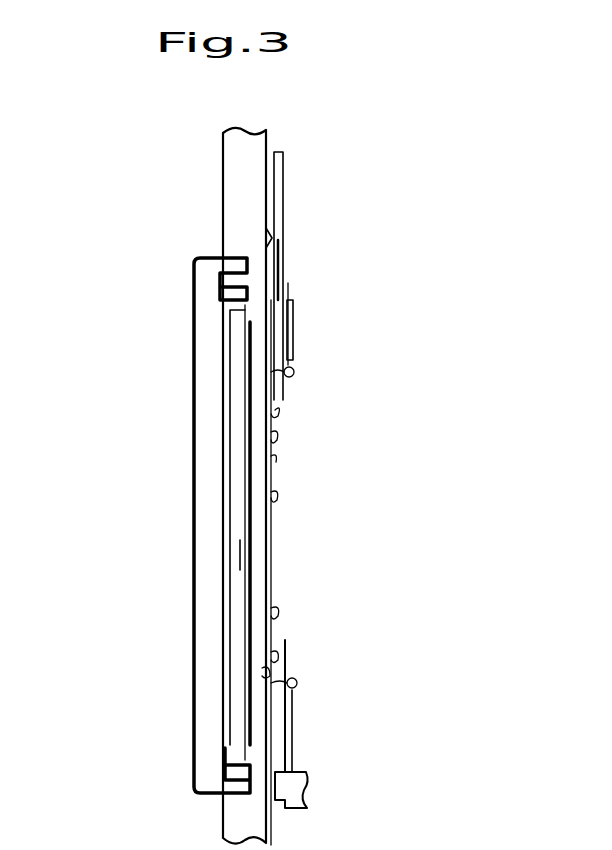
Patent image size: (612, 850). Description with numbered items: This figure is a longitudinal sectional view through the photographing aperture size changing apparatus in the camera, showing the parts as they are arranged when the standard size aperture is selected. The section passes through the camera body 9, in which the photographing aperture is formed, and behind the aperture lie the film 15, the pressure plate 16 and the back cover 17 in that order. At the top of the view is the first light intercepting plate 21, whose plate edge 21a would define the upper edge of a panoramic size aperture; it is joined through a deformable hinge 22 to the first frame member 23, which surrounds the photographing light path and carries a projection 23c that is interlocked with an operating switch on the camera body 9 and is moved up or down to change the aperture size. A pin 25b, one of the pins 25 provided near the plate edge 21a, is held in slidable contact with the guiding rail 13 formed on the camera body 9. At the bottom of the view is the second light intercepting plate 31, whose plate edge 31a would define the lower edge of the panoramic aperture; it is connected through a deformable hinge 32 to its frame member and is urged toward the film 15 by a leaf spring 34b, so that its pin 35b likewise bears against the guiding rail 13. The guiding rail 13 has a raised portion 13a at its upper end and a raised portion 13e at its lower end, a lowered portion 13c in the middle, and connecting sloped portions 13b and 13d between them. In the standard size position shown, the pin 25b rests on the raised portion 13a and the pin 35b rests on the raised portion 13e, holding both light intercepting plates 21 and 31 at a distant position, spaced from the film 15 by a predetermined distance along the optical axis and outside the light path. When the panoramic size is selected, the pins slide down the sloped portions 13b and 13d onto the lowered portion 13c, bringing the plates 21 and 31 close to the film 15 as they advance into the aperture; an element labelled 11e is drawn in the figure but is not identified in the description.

The camera body 9 is at (238, 157).
The notch of board 11e is at (270, 238).
The guiding rail 13 is at (283, 410).
The raised portion 13a is at (273, 437).
The sloped portion 13b is at (270, 460).
The lowered portion 13c is at (272, 497).
The sloped portion 13d is at (275, 613).
The raised portion 13e is at (277, 657).
The film 15 is at (252, 552).
The pressure plate 16 is at (240, 407).
The back cover 17 is at (201, 380).
The first light intercepting plate 21 is at (280, 325).
The plate edge 21a is at (260, 388).
The deformable hinge 22 is at (289, 292).
The first frame member 23 is at (283, 252).
The projection 23c is at (285, 160).
The pin 25 is at (293, 319).
The pin 25b is at (296, 373).
The second light intercepting plate 31 is at (257, 722).
The plate edge 31a is at (268, 672).
The deformable hinge 32 is at (296, 755).
The leaf spring 34b is at (295, 746).
The pin 35b is at (296, 680).